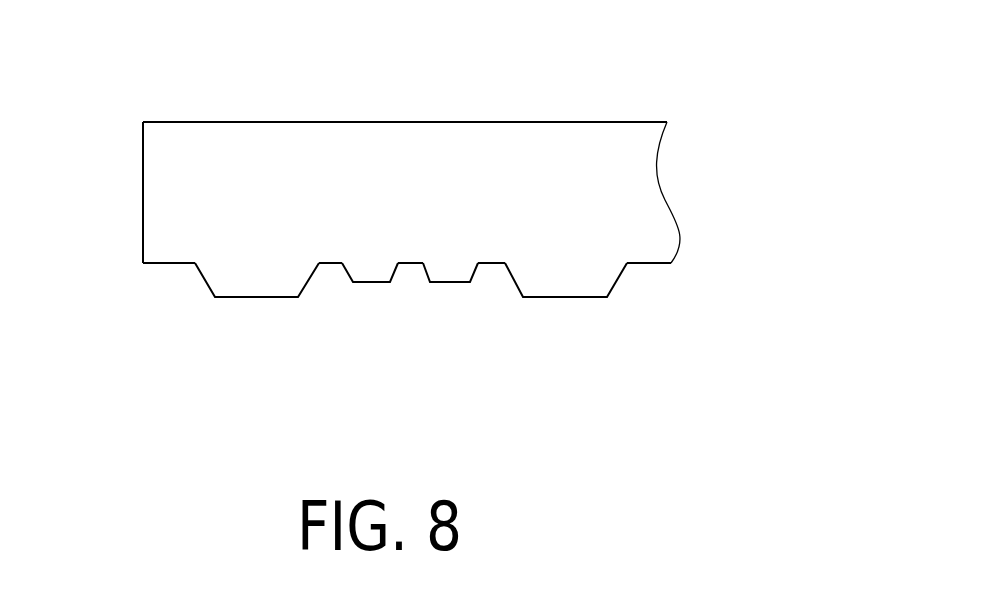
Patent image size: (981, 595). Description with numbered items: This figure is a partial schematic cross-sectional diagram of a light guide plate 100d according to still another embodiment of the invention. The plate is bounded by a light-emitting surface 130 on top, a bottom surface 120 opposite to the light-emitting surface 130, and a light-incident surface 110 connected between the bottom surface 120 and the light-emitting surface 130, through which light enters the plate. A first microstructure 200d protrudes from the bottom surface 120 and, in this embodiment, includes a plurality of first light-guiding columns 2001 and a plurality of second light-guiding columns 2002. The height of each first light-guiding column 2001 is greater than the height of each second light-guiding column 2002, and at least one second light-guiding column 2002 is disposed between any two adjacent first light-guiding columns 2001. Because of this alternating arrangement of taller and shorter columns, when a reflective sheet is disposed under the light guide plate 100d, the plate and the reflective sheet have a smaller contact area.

The light guide plate 100d is at (118, 45).
The light-incident surface 110 is at (190, 200).
The light-emitting surface 130 is at (237, 122).
The bottom surface 120 is at (647, 265).
The first microstructure 200d is at (627, 307).
The first light-guiding column 2001 is at (560, 297).
The second light-guiding column 2002 is at (450, 282).